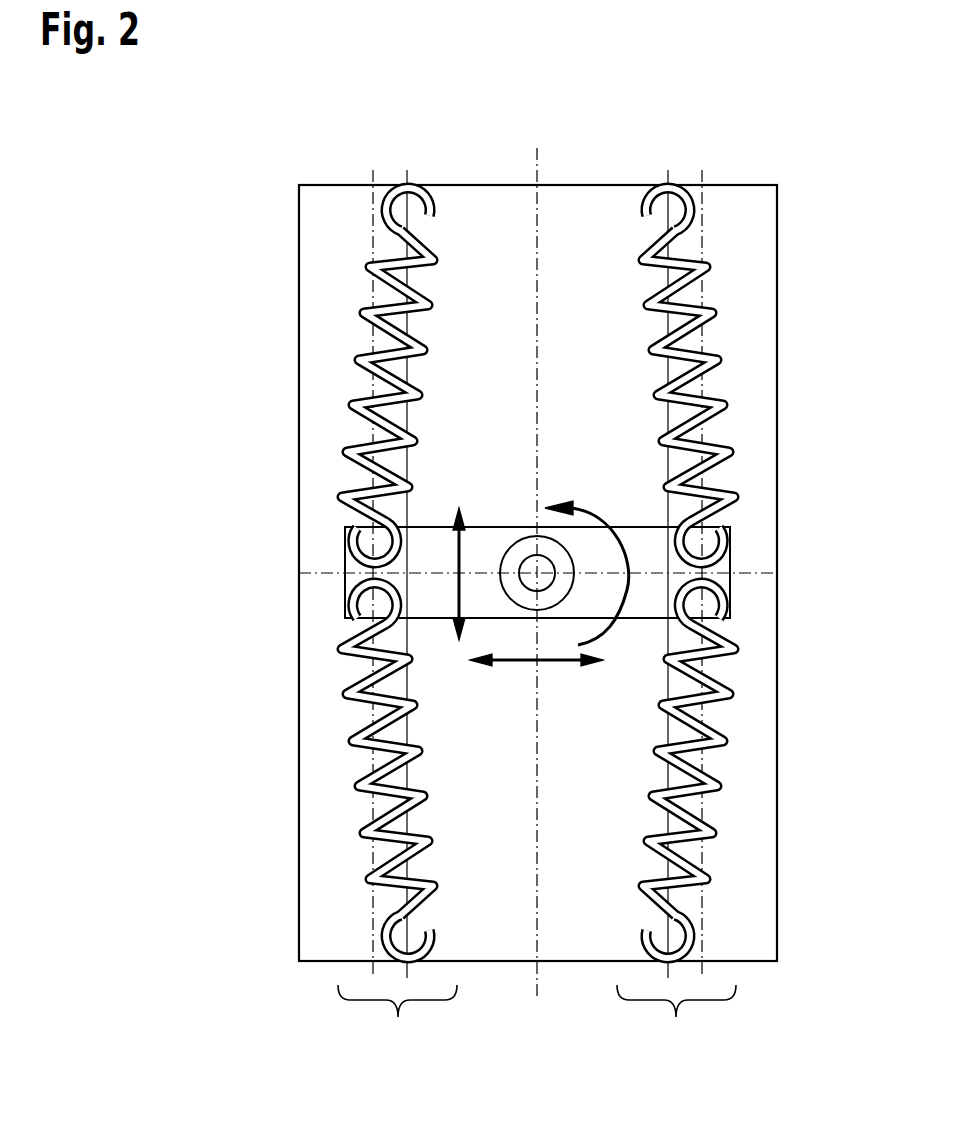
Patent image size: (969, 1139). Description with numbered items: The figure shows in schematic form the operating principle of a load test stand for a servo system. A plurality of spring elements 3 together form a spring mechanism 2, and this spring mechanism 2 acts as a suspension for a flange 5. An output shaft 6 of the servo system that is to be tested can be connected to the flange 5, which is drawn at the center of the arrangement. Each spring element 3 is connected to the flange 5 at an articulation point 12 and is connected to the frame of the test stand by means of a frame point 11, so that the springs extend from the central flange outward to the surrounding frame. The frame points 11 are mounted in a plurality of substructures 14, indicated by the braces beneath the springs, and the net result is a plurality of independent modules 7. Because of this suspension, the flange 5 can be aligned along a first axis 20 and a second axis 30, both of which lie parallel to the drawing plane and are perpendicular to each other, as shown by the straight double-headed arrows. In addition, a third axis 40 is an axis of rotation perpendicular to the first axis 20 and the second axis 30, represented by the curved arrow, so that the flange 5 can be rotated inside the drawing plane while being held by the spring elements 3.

The spring mechanism 2 is at (362, 292).
The spring element 3 is at (367, 420).
The flange 5 is at (640, 607).
The output shaft 6 is at (530, 562).
The independent module 7 is at (765, 313).
The frame point 11 is at (418, 210).
The articulation point 12 is at (365, 538).
The substructure 14 is at (537, 1019).
The first axis 20 is at (552, 668).
The second axis 30 is at (455, 594).
The third axis 40 is at (605, 505).